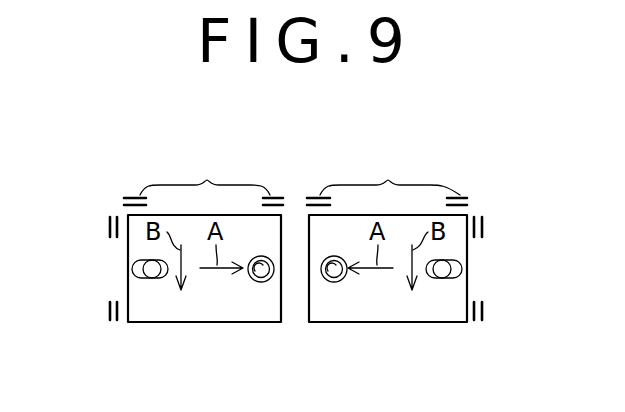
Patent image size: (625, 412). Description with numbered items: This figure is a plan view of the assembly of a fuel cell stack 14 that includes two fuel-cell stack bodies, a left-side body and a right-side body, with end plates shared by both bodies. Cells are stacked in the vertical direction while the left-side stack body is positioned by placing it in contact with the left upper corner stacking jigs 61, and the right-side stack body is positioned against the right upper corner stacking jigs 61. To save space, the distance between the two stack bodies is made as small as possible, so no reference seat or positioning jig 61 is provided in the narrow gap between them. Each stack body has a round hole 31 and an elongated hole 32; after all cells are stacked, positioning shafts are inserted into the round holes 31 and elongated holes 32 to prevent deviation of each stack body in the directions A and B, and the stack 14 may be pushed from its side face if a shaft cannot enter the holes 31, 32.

The fuel cell stack 14 is at (145, 312).
The round hole 31 is at (332, 282).
The elongated hole 32 is at (135, 267).
The stacking jig 61 is at (520, 322).